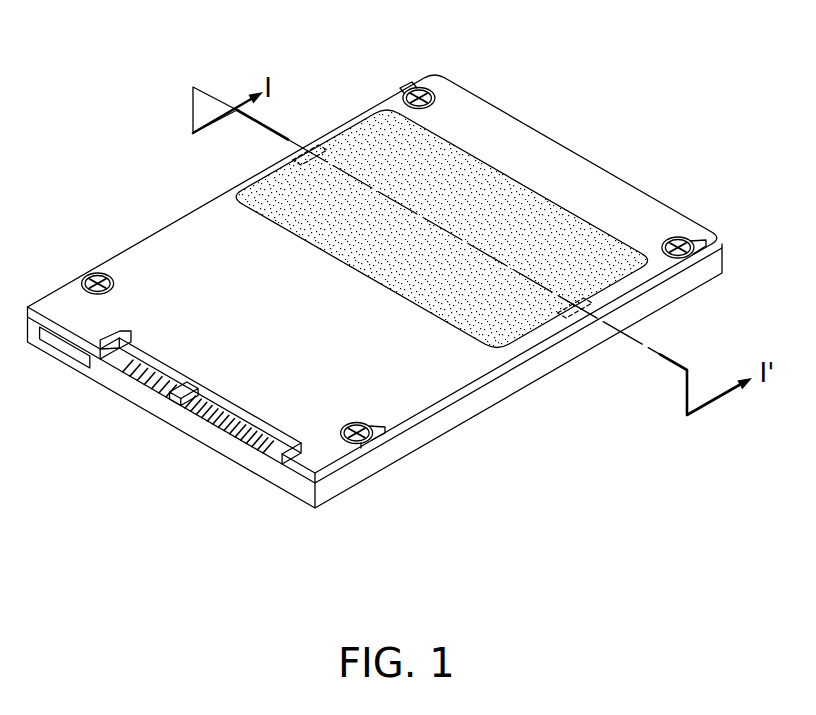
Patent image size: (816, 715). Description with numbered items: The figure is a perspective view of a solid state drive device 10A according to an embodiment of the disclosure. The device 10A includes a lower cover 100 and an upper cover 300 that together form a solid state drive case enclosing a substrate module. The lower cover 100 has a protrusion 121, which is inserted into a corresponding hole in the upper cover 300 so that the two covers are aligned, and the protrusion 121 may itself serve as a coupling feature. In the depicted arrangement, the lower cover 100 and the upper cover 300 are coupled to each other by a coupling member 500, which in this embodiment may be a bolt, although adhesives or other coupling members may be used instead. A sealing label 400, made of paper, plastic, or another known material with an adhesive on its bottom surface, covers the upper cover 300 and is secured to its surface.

The solid state drive device 10A is at (386, 315).
The lower cover 100 is at (473, 402).
The protrusion 121 is at (316, 142).
The upper cover 300 is at (620, 187).
The sealing label 400 is at (500, 183).
The coupling member 500 is at (411, 90).